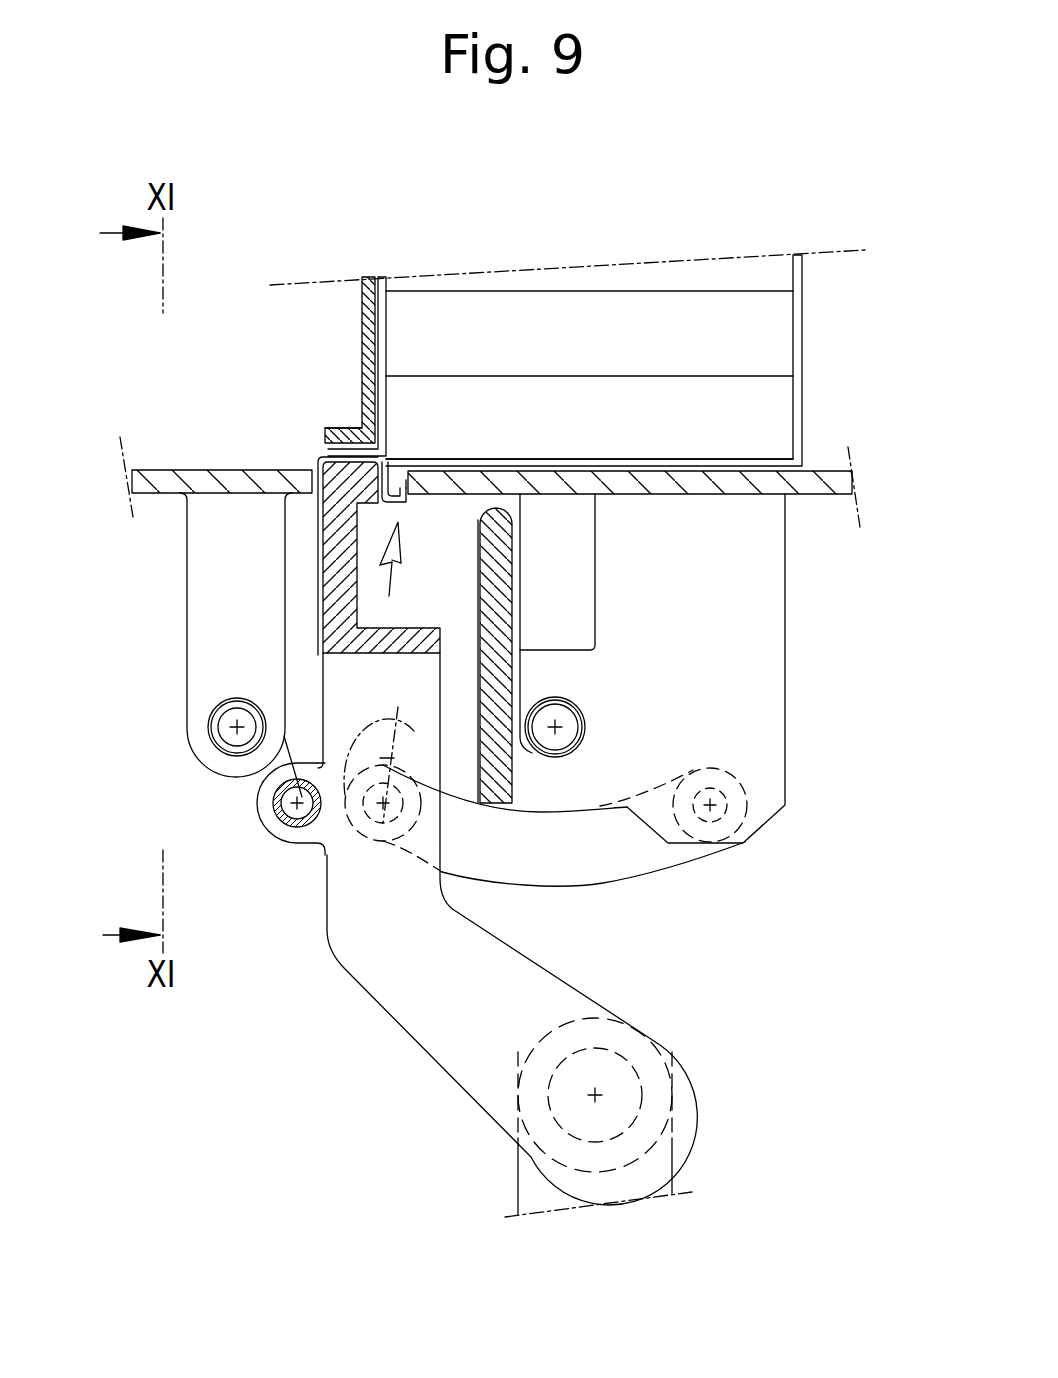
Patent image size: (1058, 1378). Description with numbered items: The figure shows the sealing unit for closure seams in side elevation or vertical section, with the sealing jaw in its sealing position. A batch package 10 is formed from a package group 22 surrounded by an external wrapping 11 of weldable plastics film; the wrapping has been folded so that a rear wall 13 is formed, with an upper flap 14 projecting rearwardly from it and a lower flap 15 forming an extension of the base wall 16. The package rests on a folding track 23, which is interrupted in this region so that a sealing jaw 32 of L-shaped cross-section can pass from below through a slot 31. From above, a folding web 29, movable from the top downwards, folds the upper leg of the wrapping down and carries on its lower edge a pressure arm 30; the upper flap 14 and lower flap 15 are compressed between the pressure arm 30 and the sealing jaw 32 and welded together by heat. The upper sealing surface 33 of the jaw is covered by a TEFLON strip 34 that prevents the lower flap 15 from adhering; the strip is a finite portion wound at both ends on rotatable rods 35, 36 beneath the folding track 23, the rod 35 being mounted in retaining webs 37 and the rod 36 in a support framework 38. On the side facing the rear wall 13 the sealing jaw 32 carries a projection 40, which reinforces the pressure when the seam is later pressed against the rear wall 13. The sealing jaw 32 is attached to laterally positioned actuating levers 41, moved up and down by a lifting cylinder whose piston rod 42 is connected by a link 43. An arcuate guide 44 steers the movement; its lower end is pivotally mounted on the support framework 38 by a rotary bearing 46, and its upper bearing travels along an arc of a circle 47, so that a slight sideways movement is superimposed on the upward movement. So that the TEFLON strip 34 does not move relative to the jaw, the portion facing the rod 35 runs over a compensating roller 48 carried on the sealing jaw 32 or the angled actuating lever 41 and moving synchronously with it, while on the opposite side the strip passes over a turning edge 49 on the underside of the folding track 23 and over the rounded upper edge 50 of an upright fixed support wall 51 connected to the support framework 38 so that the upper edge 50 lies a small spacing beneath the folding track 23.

The batch package 10 is at (708, 250).
The package group 22 is at (773, 278).
The external wrapping 11 is at (803, 305).
The base wall 16 is at (733, 462).
The folding web 29 is at (363, 358).
The rear wall 13 is at (380, 335).
The lower flap 15 is at (384, 452).
The pressure arm 30 is at (340, 432).
The turning edge 49 is at (400, 496).
The folding track 23 is at (152, 470).
The sealing jaw 32 is at (338, 594).
The slot 31 is at (318, 460).
The upper flap 14 is at (320, 473).
The sealing surface 33 is at (318, 518).
The projection 40 is at (358, 503).
The retaining webs 37 is at (218, 620).
The rod 35 is at (225, 740).
The TEFLON strip 34 is at (322, 628).
The compensating roller 48 is at (296, 838).
The upper edge 50 is at (513, 540).
The support wall 51 is at (510, 648).
The support framework 38 is at (767, 711).
The rod 36 is at (572, 727).
The rotary bearing 46 is at (727, 787).
The guide 44 is at (615, 866).
The arc of a circle 47 is at (393, 824).
The actuating lever 41 is at (455, 1033).
The link 43 is at (616, 1077).
The piston rod 42 is at (648, 1178).